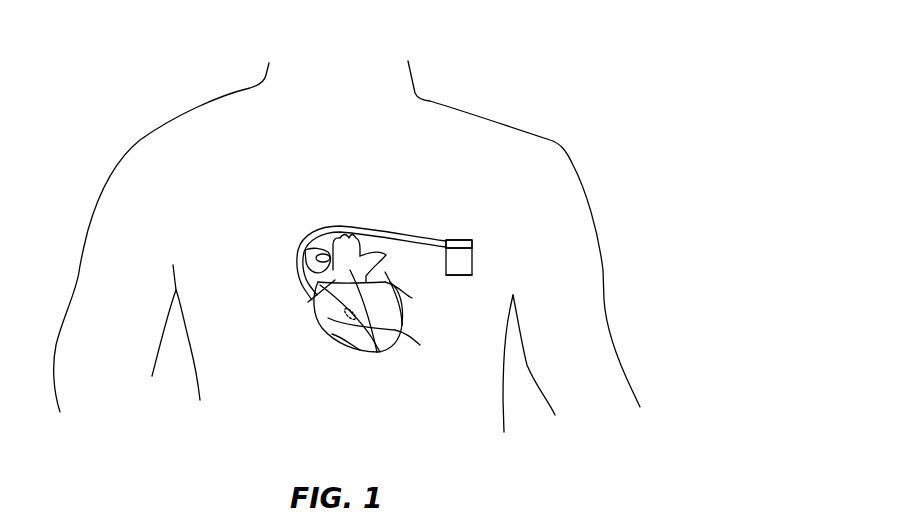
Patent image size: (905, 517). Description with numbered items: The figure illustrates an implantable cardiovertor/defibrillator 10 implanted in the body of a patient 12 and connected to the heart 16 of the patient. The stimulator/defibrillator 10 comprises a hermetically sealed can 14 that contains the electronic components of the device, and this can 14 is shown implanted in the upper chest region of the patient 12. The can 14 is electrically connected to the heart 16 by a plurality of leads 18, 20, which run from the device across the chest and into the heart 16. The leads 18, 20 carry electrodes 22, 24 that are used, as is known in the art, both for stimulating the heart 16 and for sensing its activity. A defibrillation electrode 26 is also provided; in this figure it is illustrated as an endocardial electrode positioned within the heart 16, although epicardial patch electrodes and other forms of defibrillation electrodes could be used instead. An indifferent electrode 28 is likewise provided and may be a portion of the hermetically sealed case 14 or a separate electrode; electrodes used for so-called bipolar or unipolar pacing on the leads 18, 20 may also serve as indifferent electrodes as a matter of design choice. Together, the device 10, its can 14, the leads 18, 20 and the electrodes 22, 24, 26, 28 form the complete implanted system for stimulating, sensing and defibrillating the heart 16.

The implantable cardiovertor/defibrillator 10 is at (477, 241).
The patient 12 is at (545, 96).
The hermetically sealed can 14 is at (473, 258).
The heart 16 is at (316, 324).
The lead 18 is at (345, 226).
The lead 20 is at (389, 230).
The electrode 22 is at (412, 298).
The electrode 24 is at (420, 345).
The defibrillation electrode 26 is at (332, 334).
The indifferent electrode 28 is at (463, 270).